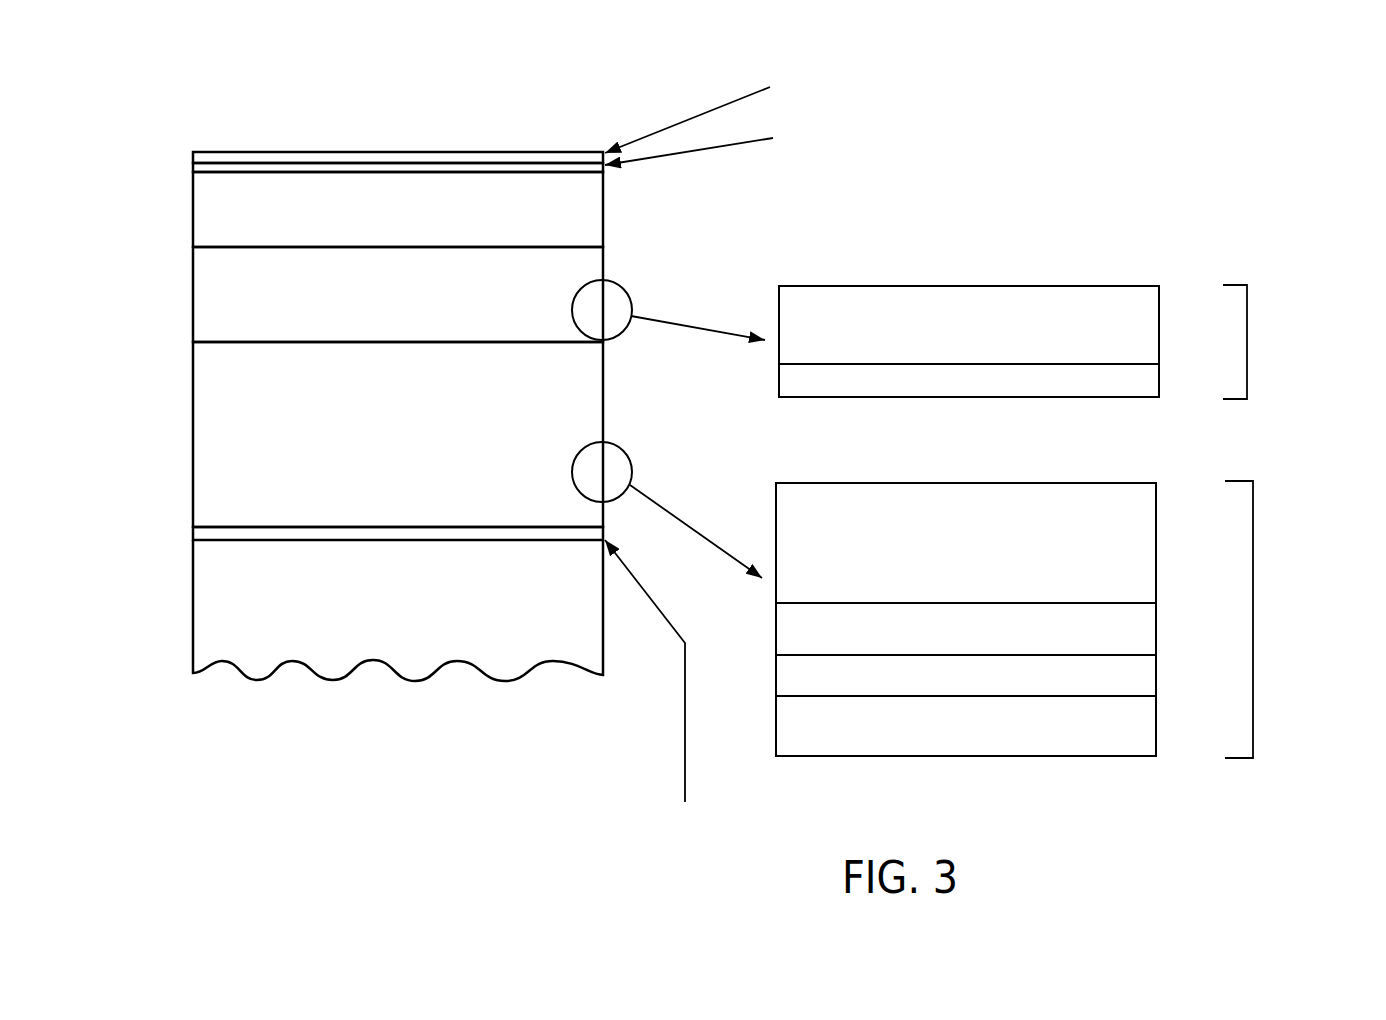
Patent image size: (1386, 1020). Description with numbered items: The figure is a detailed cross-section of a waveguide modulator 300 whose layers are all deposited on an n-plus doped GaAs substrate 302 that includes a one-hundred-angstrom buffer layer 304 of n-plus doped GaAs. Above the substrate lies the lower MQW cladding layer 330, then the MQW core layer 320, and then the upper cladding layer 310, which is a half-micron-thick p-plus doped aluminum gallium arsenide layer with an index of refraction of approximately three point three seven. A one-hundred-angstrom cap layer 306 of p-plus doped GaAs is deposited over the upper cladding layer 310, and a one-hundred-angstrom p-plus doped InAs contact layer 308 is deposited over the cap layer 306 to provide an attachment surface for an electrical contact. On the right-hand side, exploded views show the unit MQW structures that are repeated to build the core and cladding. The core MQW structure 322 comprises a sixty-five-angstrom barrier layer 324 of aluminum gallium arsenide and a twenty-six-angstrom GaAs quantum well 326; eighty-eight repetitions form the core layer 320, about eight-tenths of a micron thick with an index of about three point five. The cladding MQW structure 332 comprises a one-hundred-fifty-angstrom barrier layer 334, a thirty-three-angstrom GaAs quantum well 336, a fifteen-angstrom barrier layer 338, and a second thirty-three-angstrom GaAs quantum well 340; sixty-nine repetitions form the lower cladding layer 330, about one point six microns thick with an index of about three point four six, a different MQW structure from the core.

The waveguide modulator 300 is at (699, 436).
The substrate 302 is at (605, 633).
The buffer layer 304 is at (605, 533).
The cap layer 306 is at (697, 153).
The contact layer 308 is at (684, 123).
The upper cladding layer 310 is at (605, 213).
The MQW core layer 320 is at (605, 265).
The core MQW structure 322 is at (975, 318).
The barrier layer 324 is at (779, 326).
The GaAs quantum well 326 is at (779, 383).
The lower MQW cladding layer 330 is at (605, 410).
The cladding MQW structure 332 is at (977, 591).
The barrier layer 334 is at (776, 548).
The GaAs quantum well 336 is at (776, 630).
The barrier layer 338 is at (776, 677).
The second GaAs quantum well 340 is at (776, 728).